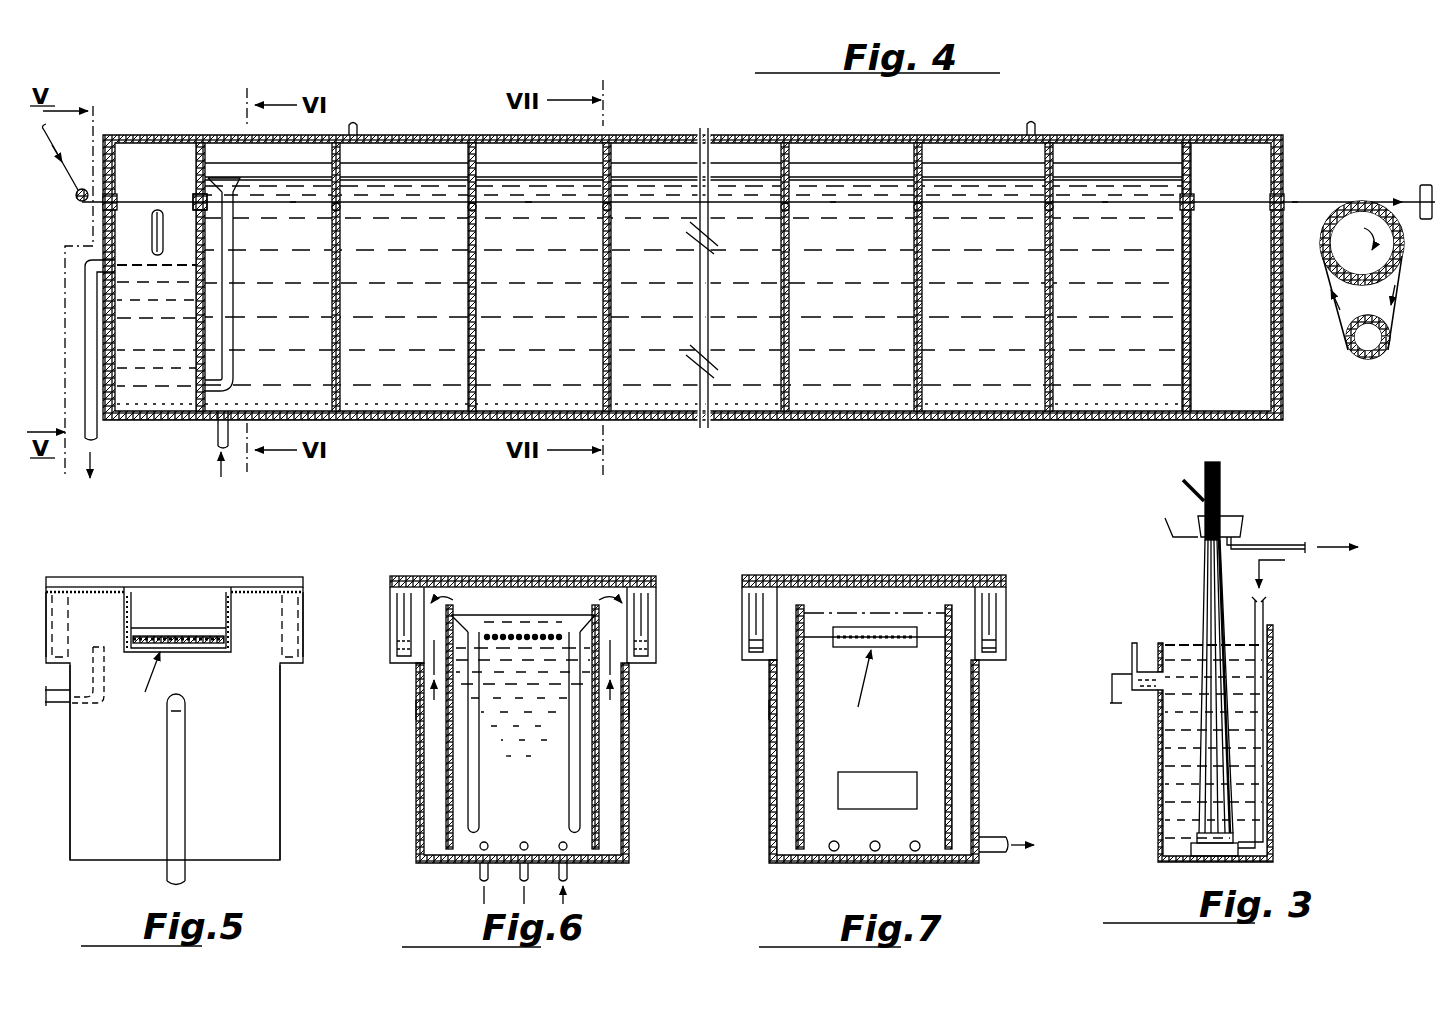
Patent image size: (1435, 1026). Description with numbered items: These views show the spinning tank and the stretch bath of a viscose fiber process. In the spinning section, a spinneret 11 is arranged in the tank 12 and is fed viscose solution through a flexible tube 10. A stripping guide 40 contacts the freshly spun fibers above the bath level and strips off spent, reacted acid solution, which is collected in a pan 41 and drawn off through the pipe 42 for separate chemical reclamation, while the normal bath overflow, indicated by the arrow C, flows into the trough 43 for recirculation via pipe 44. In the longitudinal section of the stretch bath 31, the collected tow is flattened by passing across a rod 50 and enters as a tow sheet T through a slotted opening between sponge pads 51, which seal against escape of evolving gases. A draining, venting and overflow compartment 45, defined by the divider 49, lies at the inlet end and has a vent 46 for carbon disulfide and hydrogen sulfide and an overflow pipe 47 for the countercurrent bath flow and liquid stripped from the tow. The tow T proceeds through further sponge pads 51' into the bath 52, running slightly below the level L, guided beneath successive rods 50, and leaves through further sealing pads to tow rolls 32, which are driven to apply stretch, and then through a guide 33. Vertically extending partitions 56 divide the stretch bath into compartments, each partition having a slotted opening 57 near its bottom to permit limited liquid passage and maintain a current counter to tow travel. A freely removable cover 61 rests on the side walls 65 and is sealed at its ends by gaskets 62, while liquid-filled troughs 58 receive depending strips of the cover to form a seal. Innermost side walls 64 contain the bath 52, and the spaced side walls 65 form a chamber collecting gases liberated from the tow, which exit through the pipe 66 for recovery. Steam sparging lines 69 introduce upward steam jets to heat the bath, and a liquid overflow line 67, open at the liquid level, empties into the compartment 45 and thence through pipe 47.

In FIG. 3, the flexible tube 10 is at (1266, 603).
In FIG. 3, the spinneret 11 is at (1190, 858).
In FIG. 3, the tank 12 is at (1160, 787).
In FIG. 5, the stretch bath 31 is at (281, 809).
In FIG. 6, the stretch bath 31 is at (416, 814).
In FIG. 7, the stretch bath 31 is at (769, 752).
In FIG. 4, the tow rolls 32 is at (1328, 272).
In FIG. 4, the guide 33 is at (1417, 192).
In FIG. 3, the stripping guide 40 is at (1185, 488).
In FIG. 3, the pan 41 is at (1225, 527).
In FIG. 3, the pipe 42 is at (1287, 545).
In FIG. 3, the trough 43 is at (1147, 693).
In FIG. 3, the pipe 44 is at (1112, 680).
In FIG. 4, the draining, venting and overflow compartment 45 is at (171, 346).
In FIG. 4, the vent 46 is at (153, 233).
In FIG. 5, the vent 46 is at (61, 706).
In FIG. 4, the overflow pipe 47 is at (85, 372).
In FIG. 5, the overflow pipe 47 is at (173, 785).
In FIG. 4, the divider 49 is at (197, 250).
In FIG. 4, the rod 50 is at (75, 198).
In FIG. 7, the rod 50 is at (920, 632).
In FIG. 4, the sponge pads 51 is at (155, 179).
In FIG. 5, the sponge pads 51 is at (190, 678).
In FIG. 4, the sponge pads 51' is at (190, 186).
In FIG. 4, the bath 52 is at (420, 346).
In FIG. 6, the bath 52 is at (536, 801).
In FIG. 4, the partitions 56 is at (470, 285).
In FIG. 4, the slotted opening 57 is at (604, 375).
In FIG. 7, the slotted opening 57 is at (891, 803).
In FIG. 5, the troughs 58 is at (59, 611).
In FIG. 6, the troughs 58 is at (392, 622).
In FIG. 4, the cover 61 is at (650, 136).
In FIG. 5, the cover 61 is at (204, 577).
In FIG. 6, the cover 61 is at (553, 578).
In FIG. 7, the cover 61 is at (906, 577).
In FIG. 5, the gaskets 62 is at (133, 602).
In FIG. 4, the innermost side walls 64 is at (1100, 168).
In FIG. 6, the innermost side walls 64 is at (446, 728).
In FIG. 7, the innermost side walls 64 is at (945, 754).
In FIG. 5, the side walls 65 is at (70, 774).
In FIG. 6, the side walls 65 is at (629, 695).
In FIG. 7, the side walls 65 is at (769, 709).
In FIG. 7, the pipe 66 is at (992, 838).
In FIG. 4, the liquid overflow line 67 is at (236, 328).
In FIG. 6, the liquid overflow line 67 is at (472, 775).
In FIG. 4, the steam sparging lines 69 is at (218, 440).
In FIG. 6, the steam sparging lines 69 is at (564, 841).
In FIG. 7, the steam sparging lines 69 is at (914, 841).
In FIG. 4, the tow sheet T is at (161, 192).
In FIG. 5, the tow sheet T is at (145, 691).
In FIG. 6, the tow sheet T is at (513, 628).
In FIG. 7, the tow sheet T is at (860, 690).
In FIG. 4, the level L is at (407, 167).
In FIG. 3, the arrow C is at (1147, 662).